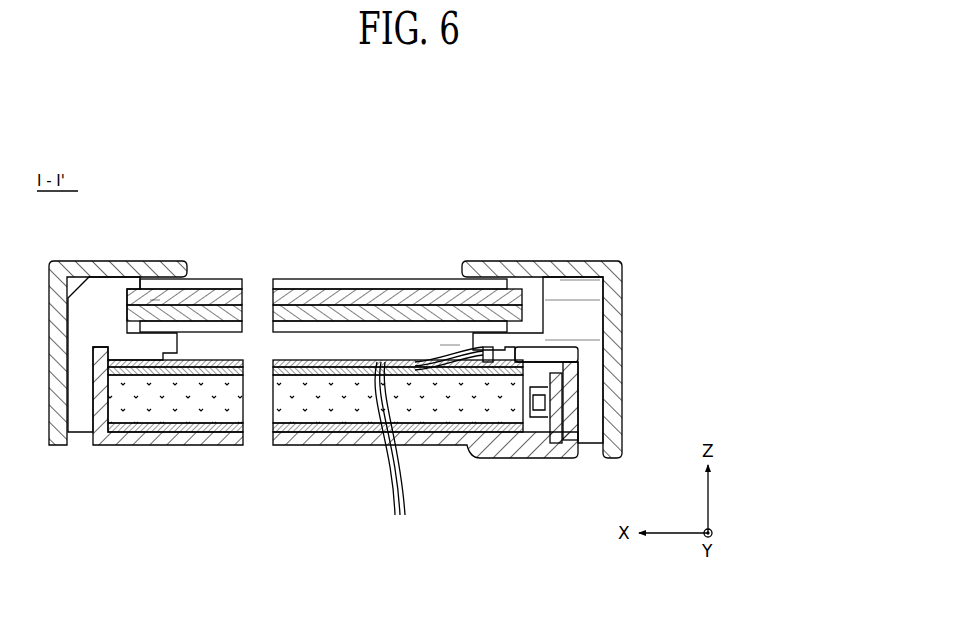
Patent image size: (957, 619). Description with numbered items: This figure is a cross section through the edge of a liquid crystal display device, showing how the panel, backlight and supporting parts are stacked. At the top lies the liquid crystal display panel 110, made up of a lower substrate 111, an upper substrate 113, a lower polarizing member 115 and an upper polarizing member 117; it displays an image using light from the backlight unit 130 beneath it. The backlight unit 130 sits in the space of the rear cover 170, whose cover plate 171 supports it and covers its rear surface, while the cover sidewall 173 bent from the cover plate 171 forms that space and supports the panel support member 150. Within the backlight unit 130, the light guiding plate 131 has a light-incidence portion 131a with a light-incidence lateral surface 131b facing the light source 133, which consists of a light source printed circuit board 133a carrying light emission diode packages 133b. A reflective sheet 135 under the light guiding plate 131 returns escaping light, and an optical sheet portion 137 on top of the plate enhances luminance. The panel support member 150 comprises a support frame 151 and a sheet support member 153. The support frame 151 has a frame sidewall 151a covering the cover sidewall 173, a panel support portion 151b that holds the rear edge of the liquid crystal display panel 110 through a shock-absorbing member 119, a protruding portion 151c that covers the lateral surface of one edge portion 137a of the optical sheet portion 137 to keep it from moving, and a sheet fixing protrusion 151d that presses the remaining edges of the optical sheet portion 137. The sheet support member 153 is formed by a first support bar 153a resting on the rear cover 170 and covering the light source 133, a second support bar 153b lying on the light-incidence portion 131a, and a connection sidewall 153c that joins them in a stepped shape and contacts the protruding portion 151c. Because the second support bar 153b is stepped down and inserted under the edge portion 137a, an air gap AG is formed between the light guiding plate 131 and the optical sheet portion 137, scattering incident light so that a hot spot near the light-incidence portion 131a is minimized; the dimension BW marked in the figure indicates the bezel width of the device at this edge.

The liquid crystal display panel 110 is at (324, 258).
The lower substrate 111 is at (305, 297).
The upper substrate 113 is at (330, 313).
The lower polarizing member 115 is at (273, 281).
The upper polarizing member 117 is at (280, 218).
The shock-absorbing member 119 is at (156, 322).
The backlight unit 130 is at (341, 379).
The light guiding plate 131 is at (340, 400).
The light-incidence portion 131a is at (532, 247).
The light-incidence lateral surface 131b is at (500, 392).
The light source 133 is at (552, 505).
The light source printed circuit board 133a is at (550, 446).
The light emission diode packages 133b is at (513, 446).
The reflective sheet 135 is at (288, 442).
The optical sheet portion 137 is at (397, 451).
The edge portion of the optical sheet portion 137a is at (435, 368).
The panel support member 150 is at (745, 310).
The support frame 151 is at (696, 287).
The frame sidewall 151a is at (556, 343).
The panel support portion 151b is at (575, 283).
The protruding portion 151c is at (548, 304).
The sheet fixing protrusion 151d is at (180, 353).
The sheet support member 153 is at (631, 395).
The first support bar 153a is at (580, 355).
The second support bar 153b is at (542, 408).
The connection sidewall 153c is at (557, 396).
The rear cover 170 is at (190, 522).
The cover plate 171 is at (188, 445).
The cover sidewall 173 is at (78, 445).
The air gap AG is at (447, 357).
The bezel width BW is at (620, 247).